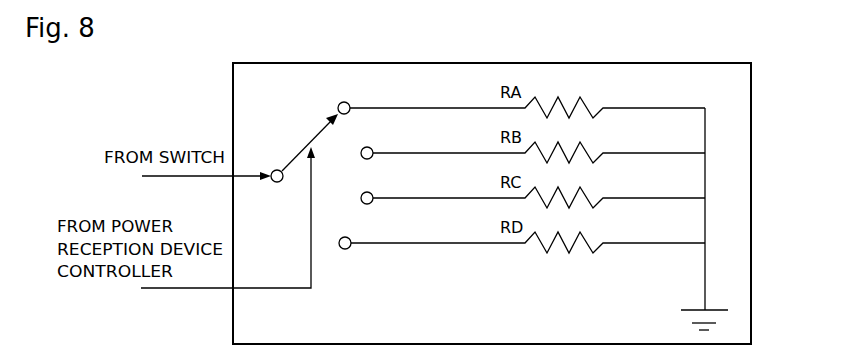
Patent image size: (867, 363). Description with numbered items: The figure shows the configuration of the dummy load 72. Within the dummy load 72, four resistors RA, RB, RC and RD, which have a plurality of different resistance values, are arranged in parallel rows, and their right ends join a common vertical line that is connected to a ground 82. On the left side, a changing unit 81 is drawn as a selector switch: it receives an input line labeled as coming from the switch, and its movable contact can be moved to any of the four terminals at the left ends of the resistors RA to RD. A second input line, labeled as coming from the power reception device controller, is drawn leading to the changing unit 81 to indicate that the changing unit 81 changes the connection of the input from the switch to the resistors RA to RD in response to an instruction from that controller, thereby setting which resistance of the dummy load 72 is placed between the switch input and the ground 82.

The dummy load 72 is at (752, 103).
The changing unit 81 is at (286, 119).
The ground 82 is at (728, 310).